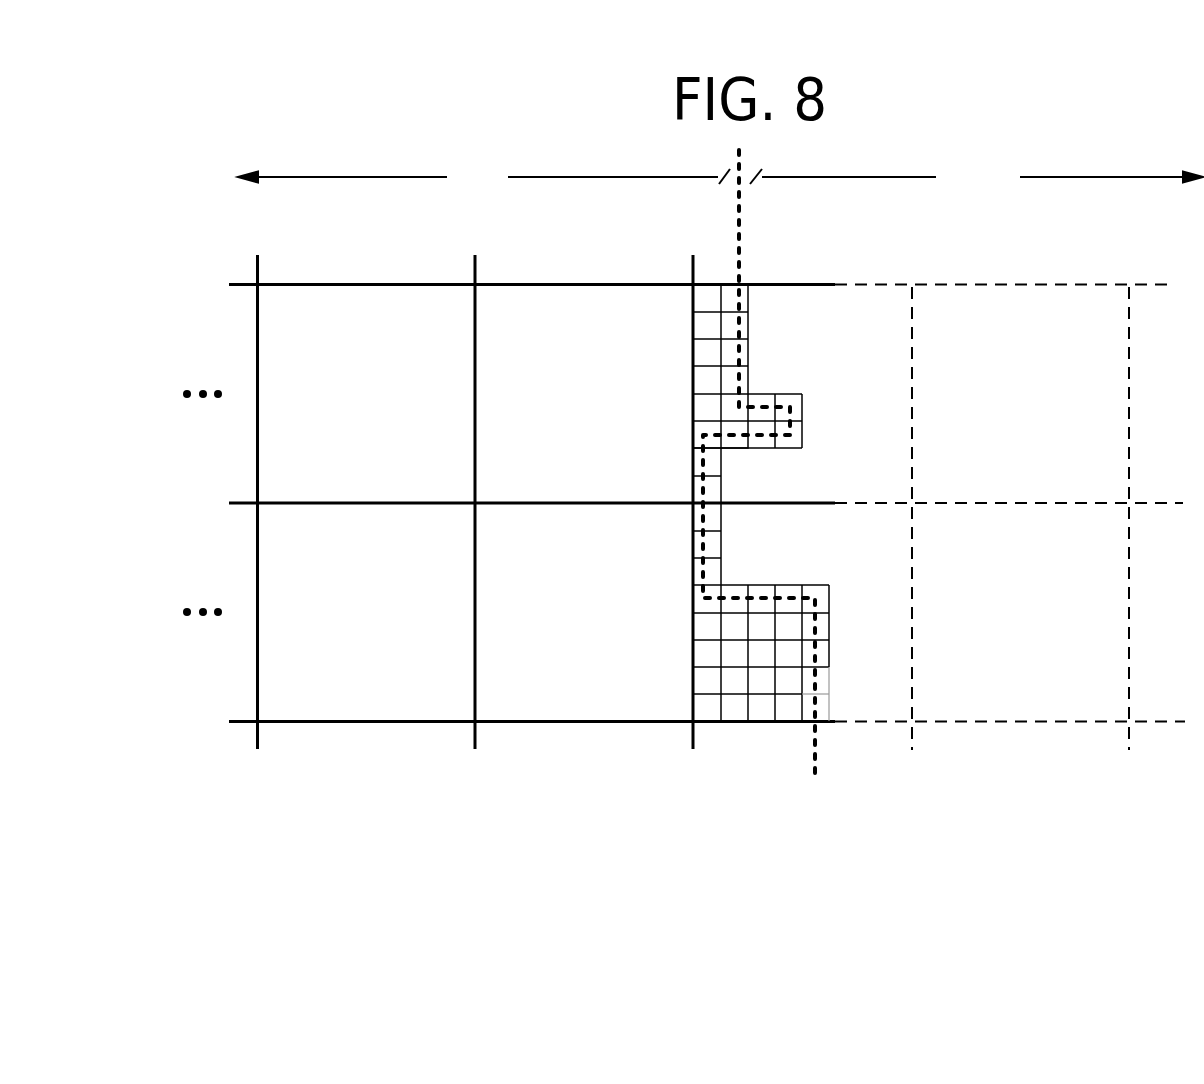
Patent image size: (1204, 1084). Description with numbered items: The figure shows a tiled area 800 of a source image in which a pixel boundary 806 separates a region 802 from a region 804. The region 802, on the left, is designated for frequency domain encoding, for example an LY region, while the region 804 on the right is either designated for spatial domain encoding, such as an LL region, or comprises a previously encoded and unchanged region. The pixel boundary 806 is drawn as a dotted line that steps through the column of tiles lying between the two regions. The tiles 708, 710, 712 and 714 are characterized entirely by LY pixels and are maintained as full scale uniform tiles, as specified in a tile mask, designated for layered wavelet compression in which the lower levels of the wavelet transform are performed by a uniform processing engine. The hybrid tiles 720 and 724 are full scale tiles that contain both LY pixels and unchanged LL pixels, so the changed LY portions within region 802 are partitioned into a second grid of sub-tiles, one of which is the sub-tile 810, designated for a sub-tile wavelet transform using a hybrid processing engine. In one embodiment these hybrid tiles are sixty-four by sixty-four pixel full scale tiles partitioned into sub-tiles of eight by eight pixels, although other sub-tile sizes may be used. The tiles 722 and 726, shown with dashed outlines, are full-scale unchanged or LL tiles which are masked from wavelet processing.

The tile 708 is at (382, 405).
The tile 710 is at (599, 405).
The tile 712 is at (382, 623).
The tile 714 is at (599, 623).
The hybrid tile 720 is at (846, 405).
The tile 722 is at (1023, 405).
The hybrid tile 724 is at (834, 569).
The tile 726 is at (1027, 623).
The tiled area 800 is at (1185, 814).
The region 802 is at (484, 176).
The region 804 is at (976, 176).
The pixel boundary 806 is at (738, 242).
The sub-tile 810 is at (734, 707).